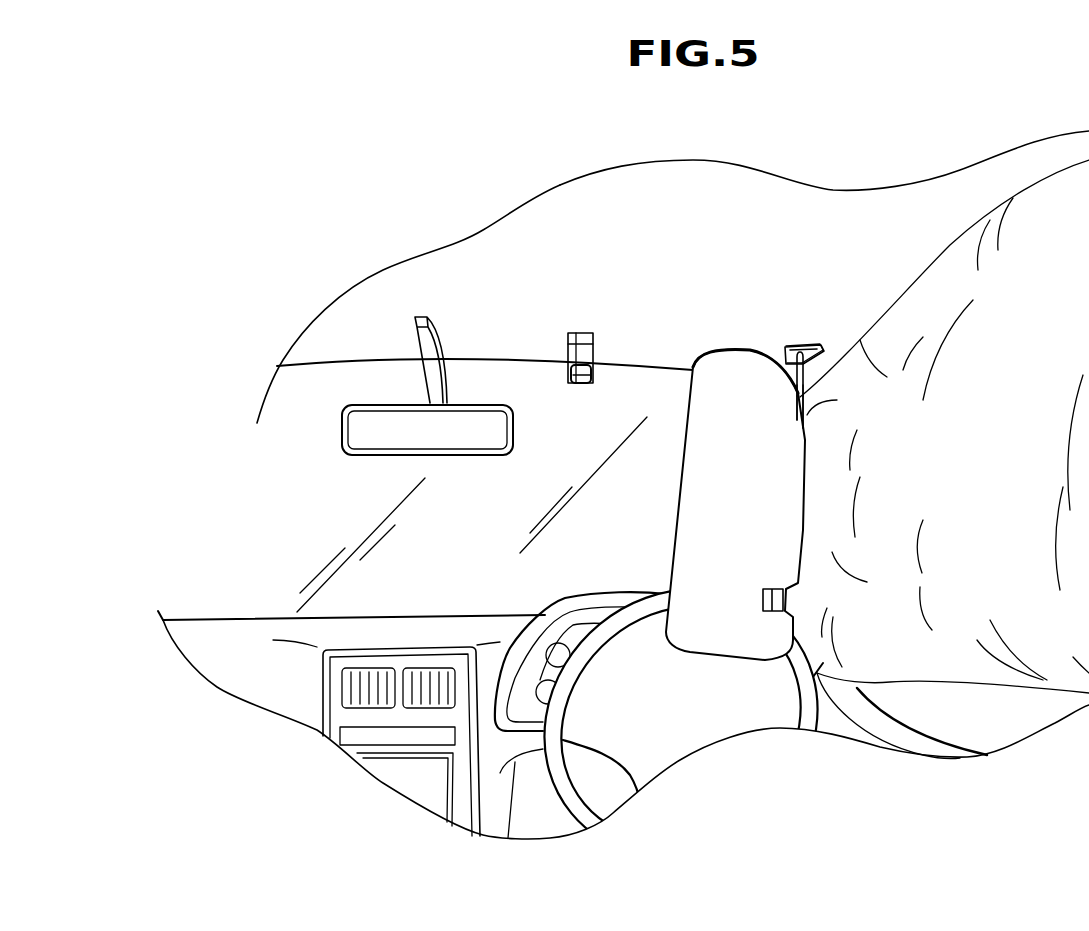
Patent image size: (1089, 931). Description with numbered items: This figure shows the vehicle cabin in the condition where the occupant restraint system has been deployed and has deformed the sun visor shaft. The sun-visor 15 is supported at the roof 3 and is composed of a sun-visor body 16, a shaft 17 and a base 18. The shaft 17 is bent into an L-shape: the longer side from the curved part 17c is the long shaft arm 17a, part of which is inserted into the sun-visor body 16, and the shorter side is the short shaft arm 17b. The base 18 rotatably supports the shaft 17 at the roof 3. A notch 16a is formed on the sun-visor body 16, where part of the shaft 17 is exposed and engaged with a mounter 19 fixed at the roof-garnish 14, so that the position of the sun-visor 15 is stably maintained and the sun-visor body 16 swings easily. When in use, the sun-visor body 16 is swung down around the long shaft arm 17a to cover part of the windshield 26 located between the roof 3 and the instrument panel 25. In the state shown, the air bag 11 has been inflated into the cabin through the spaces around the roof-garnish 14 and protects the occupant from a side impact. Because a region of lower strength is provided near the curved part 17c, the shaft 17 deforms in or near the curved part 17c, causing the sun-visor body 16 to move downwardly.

The roof 3 is at (613, 183).
The air bag 11 is at (937, 290).
The roof-garnish 14 is at (533, 210).
The sun-visor 15 is at (722, 458).
The sun-visor body 16 is at (693, 558).
The notch 16a is at (783, 589).
The shaft 17 is at (782, 375).
The long shaft arm 17a is at (797, 403).
The short shaft arm 17b is at (790, 363).
The curved part 17c is at (804, 393).
The base 18 is at (807, 347).
The mounter 19 is at (583, 352).
The instrument panel 25 is at (507, 627).
The windshield 26 is at (520, 378).